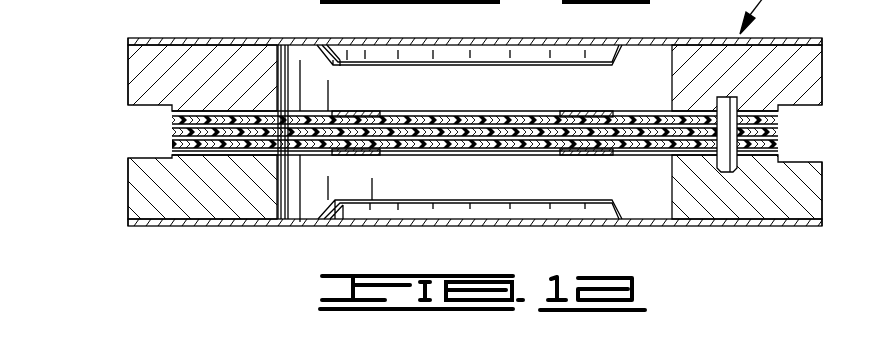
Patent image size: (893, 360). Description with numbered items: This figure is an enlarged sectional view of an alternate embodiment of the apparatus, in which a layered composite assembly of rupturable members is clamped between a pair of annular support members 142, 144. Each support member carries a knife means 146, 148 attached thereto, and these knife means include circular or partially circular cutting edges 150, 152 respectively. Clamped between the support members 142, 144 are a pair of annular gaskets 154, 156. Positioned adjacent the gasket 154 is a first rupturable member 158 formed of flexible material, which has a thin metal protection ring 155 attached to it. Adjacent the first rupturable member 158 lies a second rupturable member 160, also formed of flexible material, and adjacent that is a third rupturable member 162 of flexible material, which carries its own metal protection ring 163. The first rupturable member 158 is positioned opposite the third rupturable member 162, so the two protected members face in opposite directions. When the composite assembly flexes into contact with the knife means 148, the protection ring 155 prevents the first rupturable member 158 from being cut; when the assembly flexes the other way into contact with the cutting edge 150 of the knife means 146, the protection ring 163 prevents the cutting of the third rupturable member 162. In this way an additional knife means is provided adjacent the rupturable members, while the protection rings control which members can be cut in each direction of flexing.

The annular support member 142 is at (173, 207).
The annular support member 144 is at (175, 38).
The knife means 146 is at (220, 223).
The knife means 148 is at (233, 39).
The cutting edge 150 is at (350, 199).
The cutting edge 152 is at (508, 71).
The annular gasket 154 is at (172, 113).
The metal protection ring 155 is at (361, 112).
The annular gasket 156 is at (172, 152).
The first rupturable member 158 is at (172, 120).
The second rupturable member 160 is at (172, 128).
The third rupturable member 162 is at (172, 140).
The metal protection ring 163 is at (366, 152).